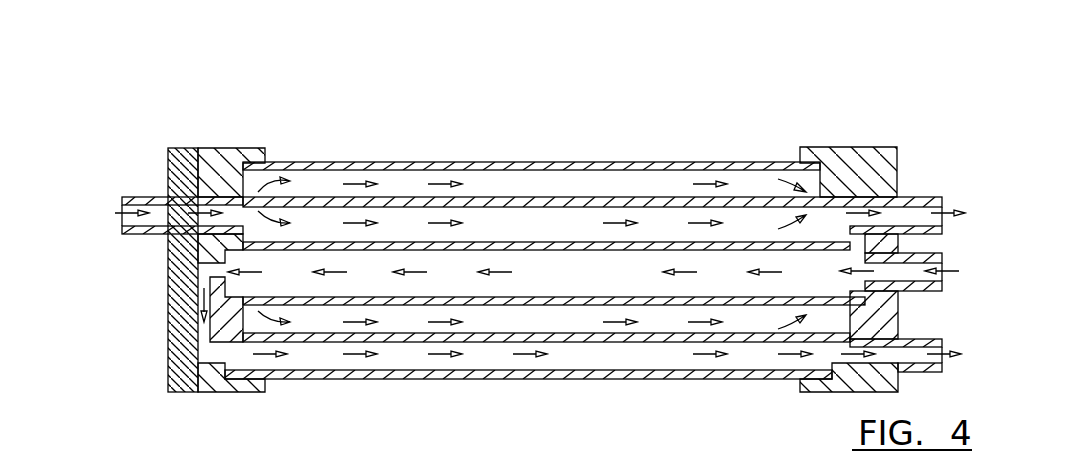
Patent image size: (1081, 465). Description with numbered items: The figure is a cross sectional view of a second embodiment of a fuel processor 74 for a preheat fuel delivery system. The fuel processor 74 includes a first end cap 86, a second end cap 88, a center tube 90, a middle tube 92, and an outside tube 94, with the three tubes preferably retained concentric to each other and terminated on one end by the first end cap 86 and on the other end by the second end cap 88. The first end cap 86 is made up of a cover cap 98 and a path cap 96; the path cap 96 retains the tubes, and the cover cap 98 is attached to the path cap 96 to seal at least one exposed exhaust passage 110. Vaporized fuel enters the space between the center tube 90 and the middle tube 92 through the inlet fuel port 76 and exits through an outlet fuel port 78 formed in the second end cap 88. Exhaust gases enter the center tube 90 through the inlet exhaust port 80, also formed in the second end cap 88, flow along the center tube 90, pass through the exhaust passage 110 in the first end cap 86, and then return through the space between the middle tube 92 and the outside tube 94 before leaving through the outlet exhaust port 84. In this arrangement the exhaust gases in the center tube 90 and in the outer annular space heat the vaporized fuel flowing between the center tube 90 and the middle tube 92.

The fuel processor 74 is at (711, 84).
The inlet fuel port 76 is at (136, 235).
The outlet fuel port 78 is at (912, 197).
The inlet exhaust port 80 is at (935, 252).
The outlet exhaust port 84 is at (922, 339).
The first end cap 86 is at (213, 148).
The second end cap 88 is at (841, 147).
The center tube 90 is at (388, 241).
The middle tube 92 is at (507, 197).
The outside tube 94 is at (645, 162).
The path cap 96 is at (243, 147).
The cover cap 98 is at (172, 148).
The exhaust passage 110 is at (204, 342).